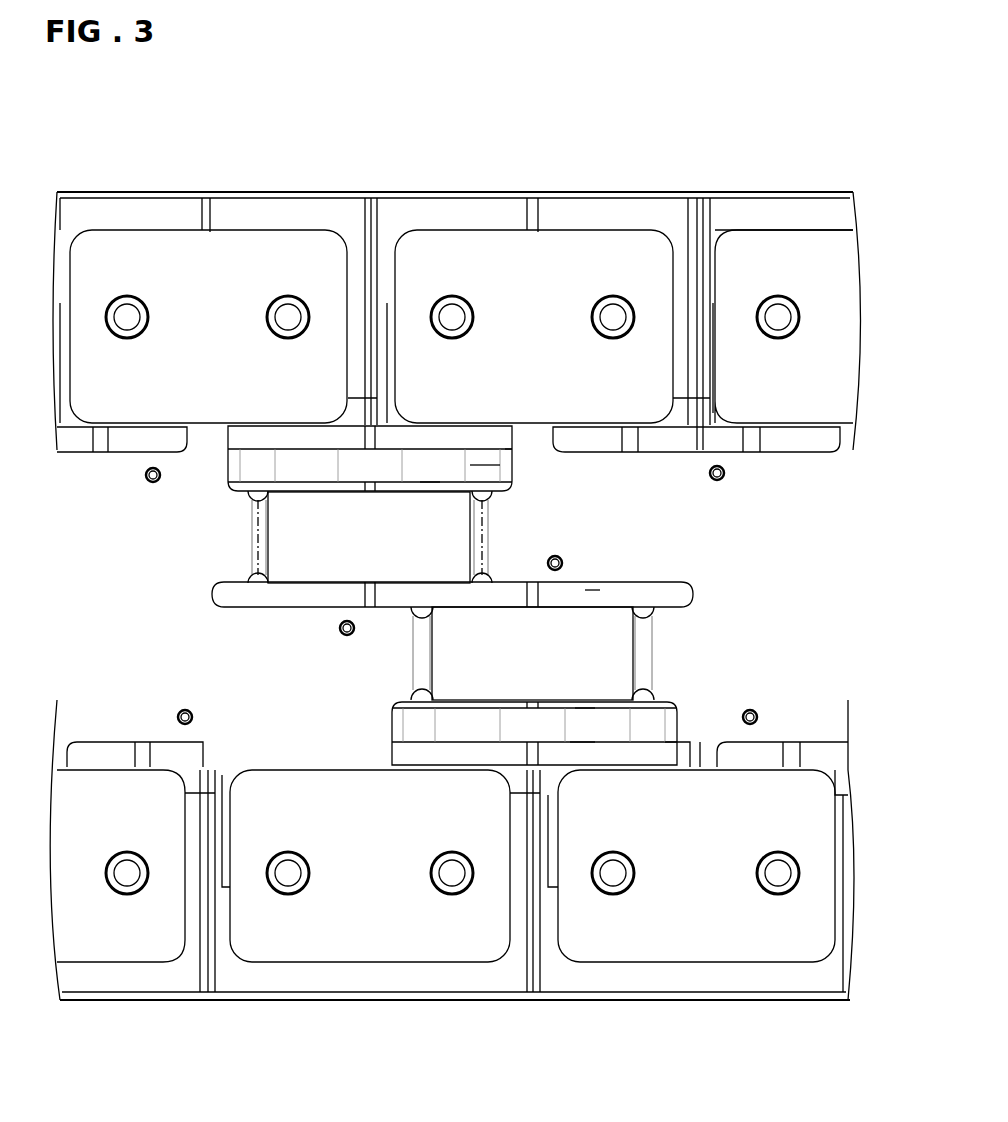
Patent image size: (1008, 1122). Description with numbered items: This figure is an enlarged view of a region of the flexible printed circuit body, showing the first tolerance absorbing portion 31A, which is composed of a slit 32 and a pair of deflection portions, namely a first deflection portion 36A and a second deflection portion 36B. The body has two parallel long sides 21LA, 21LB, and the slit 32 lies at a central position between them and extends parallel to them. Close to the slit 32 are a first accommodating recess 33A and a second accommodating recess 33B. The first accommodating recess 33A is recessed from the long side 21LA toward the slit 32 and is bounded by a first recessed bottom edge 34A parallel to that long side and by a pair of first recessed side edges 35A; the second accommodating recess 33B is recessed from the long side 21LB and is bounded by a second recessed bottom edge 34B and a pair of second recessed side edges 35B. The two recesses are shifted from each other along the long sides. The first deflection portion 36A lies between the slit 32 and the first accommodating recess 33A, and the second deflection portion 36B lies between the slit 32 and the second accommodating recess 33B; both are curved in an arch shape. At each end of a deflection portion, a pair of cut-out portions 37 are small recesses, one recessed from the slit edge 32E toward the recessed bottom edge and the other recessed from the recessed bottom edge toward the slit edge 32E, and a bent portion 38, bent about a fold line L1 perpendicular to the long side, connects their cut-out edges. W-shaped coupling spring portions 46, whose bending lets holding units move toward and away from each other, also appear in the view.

The long side 21LA is at (130, 447).
The long side 21LB is at (828, 752).
The first tolerance absorbing portion 31A is at (513, 543).
The slit 32 is at (652, 568).
The slit edge 32E is at (587, 588).
The first accommodating recess 33A is at (430, 490).
The second accommodating recess 33B is at (652, 727).
The first recessed bottom edge 34A is at (487, 465).
The second recessed bottom edge 34B is at (577, 705).
The first recessed side edges 35A is at (514, 492).
The second recessed side edges 35B is at (670, 730).
The first deflection portion 36A is at (308, 555).
The second deflection portion 36B is at (462, 642).
The cut-out portions 37 is at (253, 493).
The bent portion 38 is at (493, 533).
The coupling spring portions 46 is at (297, 467).
The fold line L1 is at (485, 537).